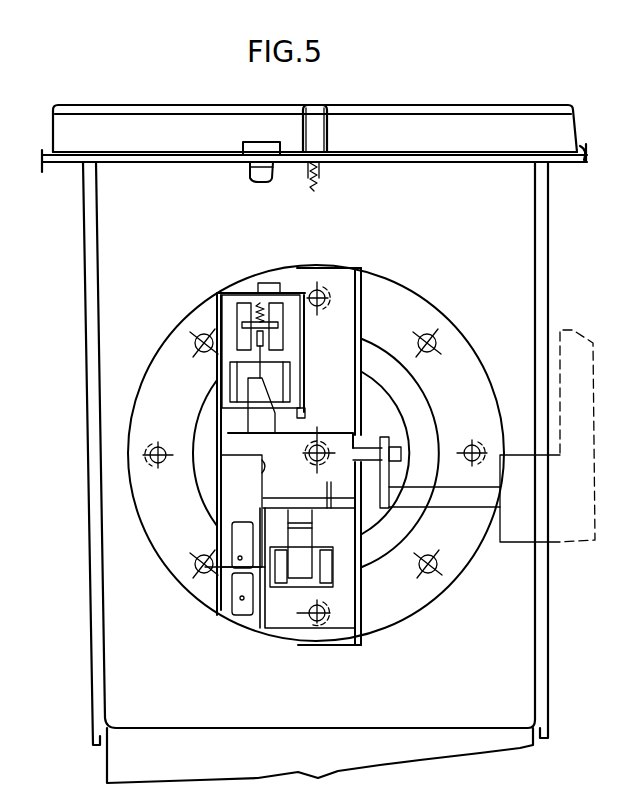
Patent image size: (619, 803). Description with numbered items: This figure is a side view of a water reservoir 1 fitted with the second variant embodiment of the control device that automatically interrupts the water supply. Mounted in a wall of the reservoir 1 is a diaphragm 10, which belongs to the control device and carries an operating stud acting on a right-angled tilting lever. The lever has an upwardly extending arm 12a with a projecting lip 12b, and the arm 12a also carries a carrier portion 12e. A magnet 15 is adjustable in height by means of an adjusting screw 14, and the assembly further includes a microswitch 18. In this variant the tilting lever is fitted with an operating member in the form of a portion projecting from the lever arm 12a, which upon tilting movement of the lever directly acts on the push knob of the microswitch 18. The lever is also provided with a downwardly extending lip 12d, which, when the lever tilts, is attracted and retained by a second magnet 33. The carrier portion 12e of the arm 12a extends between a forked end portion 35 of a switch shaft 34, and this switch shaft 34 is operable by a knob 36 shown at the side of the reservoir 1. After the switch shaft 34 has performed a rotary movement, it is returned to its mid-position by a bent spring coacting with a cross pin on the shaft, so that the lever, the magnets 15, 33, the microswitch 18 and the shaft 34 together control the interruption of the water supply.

The reservoir 1 is at (517, 207).
The diaphragm 10 is at (377, 357).
The upwardly extending arm 12a is at (217, 461).
The projecting lip 12b is at (257, 405).
The downwardly extending lip 12d is at (307, 563).
The carrier portion 12e is at (390, 447).
The adjusting screw 14 is at (262, 285).
The magnet 15 is at (247, 368).
The microswitch 18 is at (238, 492).
The second magnet 33 is at (325, 580).
The switch shaft 34 is at (455, 503).
The forked end portion 35 is at (398, 495).
The knob 36 is at (573, 525).